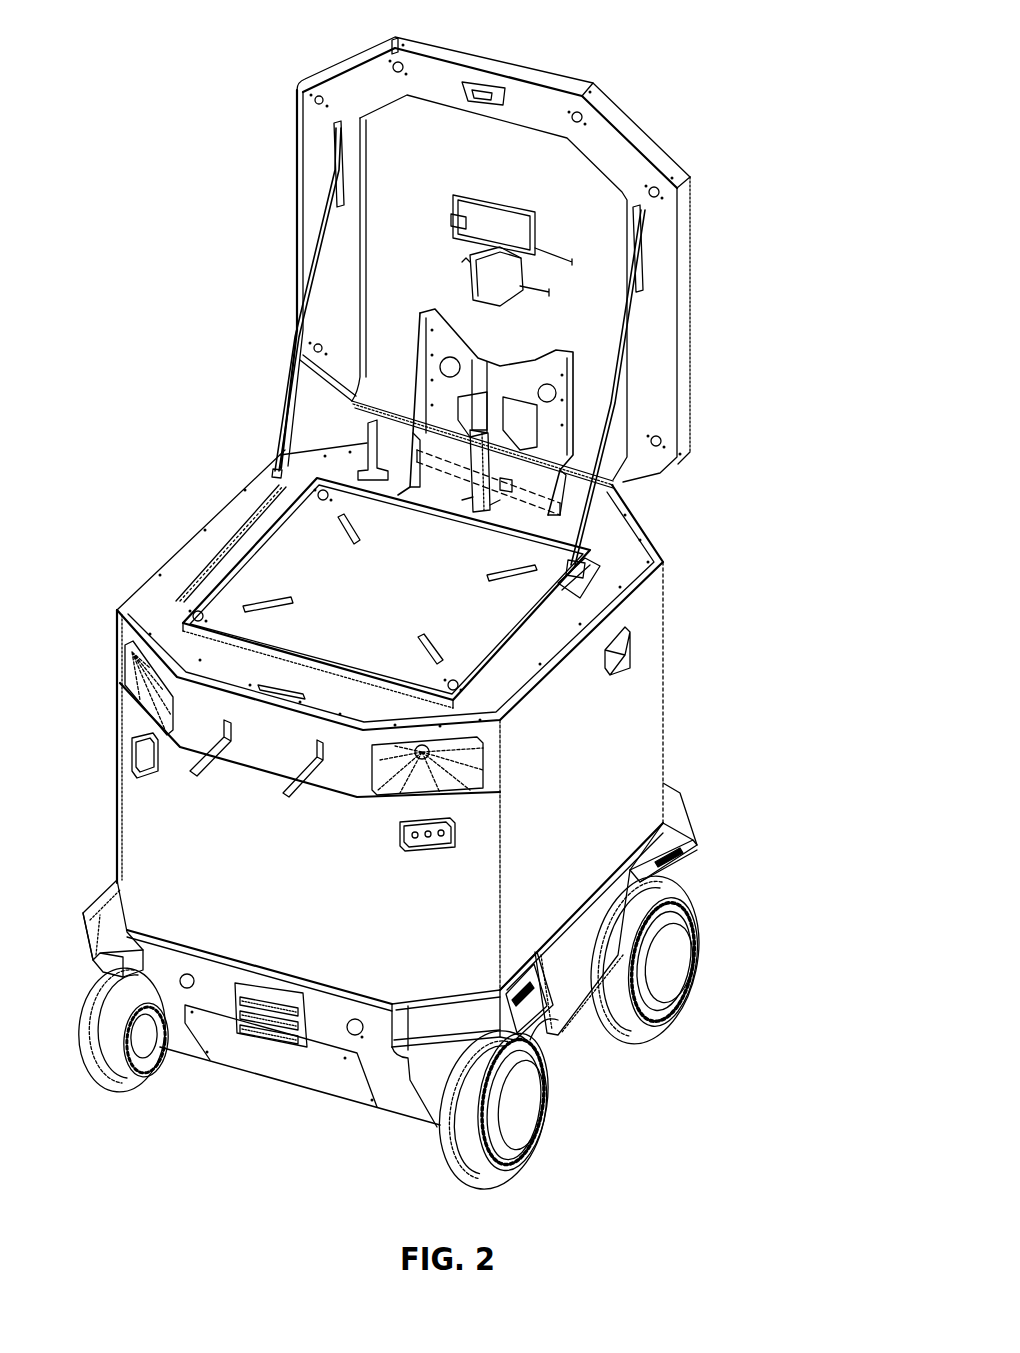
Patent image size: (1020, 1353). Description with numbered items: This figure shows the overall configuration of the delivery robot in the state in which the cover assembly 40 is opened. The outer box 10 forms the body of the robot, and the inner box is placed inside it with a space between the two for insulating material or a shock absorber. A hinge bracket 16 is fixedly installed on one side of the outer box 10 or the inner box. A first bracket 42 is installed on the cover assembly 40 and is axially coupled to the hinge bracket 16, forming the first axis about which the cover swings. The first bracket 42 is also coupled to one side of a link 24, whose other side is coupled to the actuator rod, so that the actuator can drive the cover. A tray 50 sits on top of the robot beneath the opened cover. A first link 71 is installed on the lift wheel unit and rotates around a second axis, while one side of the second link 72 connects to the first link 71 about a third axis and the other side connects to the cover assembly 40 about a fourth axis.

The outer box 10 is at (666, 735).
The hinge bracket 16 is at (540, 495).
The link 24 is at (477, 480).
The cover assembly 40 is at (646, 128).
The first bracket 42 is at (474, 372).
The tray 50 is at (283, 586).
The first link 71 is at (566, 590).
The second link 72 is at (614, 403).